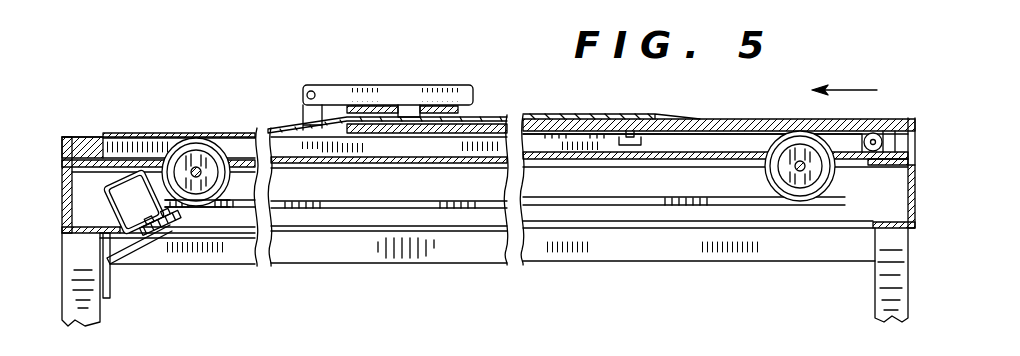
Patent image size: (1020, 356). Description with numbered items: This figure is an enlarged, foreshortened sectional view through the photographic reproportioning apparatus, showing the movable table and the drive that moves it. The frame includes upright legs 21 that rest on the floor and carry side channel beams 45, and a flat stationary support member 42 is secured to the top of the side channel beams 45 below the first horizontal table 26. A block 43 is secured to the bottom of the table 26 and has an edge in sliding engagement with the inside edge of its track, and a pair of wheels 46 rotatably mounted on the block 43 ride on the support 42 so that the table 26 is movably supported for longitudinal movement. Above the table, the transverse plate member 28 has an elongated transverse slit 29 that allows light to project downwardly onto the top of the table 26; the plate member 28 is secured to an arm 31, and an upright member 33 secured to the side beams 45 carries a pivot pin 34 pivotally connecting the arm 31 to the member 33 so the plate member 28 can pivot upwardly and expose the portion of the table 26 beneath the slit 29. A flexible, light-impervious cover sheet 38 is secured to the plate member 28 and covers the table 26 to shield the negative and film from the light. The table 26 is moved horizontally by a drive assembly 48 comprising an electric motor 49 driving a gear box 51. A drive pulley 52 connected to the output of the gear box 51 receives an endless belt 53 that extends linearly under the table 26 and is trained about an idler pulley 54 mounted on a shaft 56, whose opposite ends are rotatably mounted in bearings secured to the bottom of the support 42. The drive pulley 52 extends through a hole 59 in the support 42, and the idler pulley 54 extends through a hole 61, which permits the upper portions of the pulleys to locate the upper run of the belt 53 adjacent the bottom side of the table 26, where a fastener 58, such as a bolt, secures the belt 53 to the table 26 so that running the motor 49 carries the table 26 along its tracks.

The upright legs 21 is at (88, 307).
The first horizontal table 26 is at (867, 118).
The transverse plate member 28 is at (434, 121).
The slit 29 is at (405, 106).
The arm 31 is at (437, 107).
The upright member 33 is at (303, 112).
The pivot pin 34 is at (311, 91).
The cover sheet 38 is at (558, 117).
The support member 42 is at (697, 145).
The block 43 is at (903, 138).
The side channel beams 45 is at (62, 207).
The wheels 46 is at (876, 134).
The drive assembly 48 is at (113, 158).
The electric motor 49 is at (107, 190).
The gear box 51 is at (163, 207).
The drive pulley 52 is at (197, 165).
The endless belt 53 is at (240, 208).
The idler pulley 54 is at (790, 200).
The shaft 56 is at (806, 168).
The fastener 58 is at (630, 150).
The hole 59 is at (237, 157).
The hole 61 is at (763, 150).